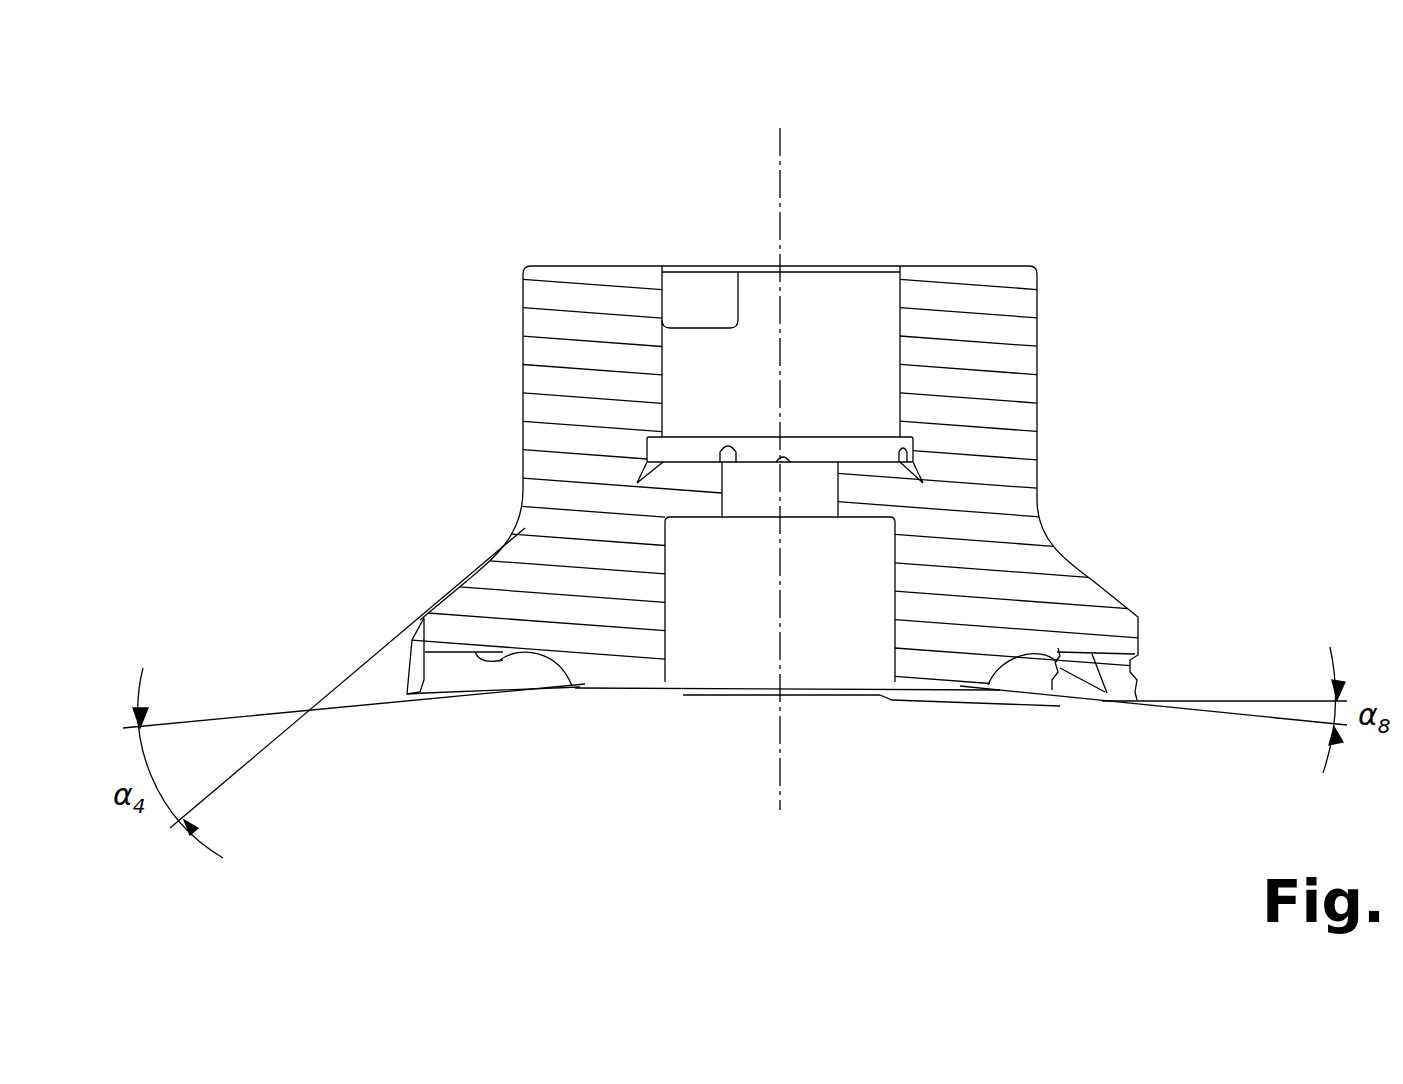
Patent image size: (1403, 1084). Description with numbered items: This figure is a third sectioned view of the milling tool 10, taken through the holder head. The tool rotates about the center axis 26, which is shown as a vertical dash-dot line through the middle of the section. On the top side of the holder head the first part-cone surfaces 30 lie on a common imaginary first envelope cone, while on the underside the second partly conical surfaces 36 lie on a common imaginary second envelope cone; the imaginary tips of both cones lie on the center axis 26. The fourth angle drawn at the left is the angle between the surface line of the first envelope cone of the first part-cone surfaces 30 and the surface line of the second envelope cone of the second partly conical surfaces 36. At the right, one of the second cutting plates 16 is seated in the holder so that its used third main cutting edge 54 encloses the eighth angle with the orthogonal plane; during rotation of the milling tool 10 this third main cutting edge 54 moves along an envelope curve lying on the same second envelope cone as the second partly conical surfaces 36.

The milling tool 10 is at (1082, 158).
The second cutting plates 16 is at (1140, 672).
The center axis 26 is at (782, 198).
The first part-cone surfaces 30 is at (462, 585).
The second partly conical surfaces 36 is at (487, 697).
The third main cutting edges 54 is at (1107, 695).